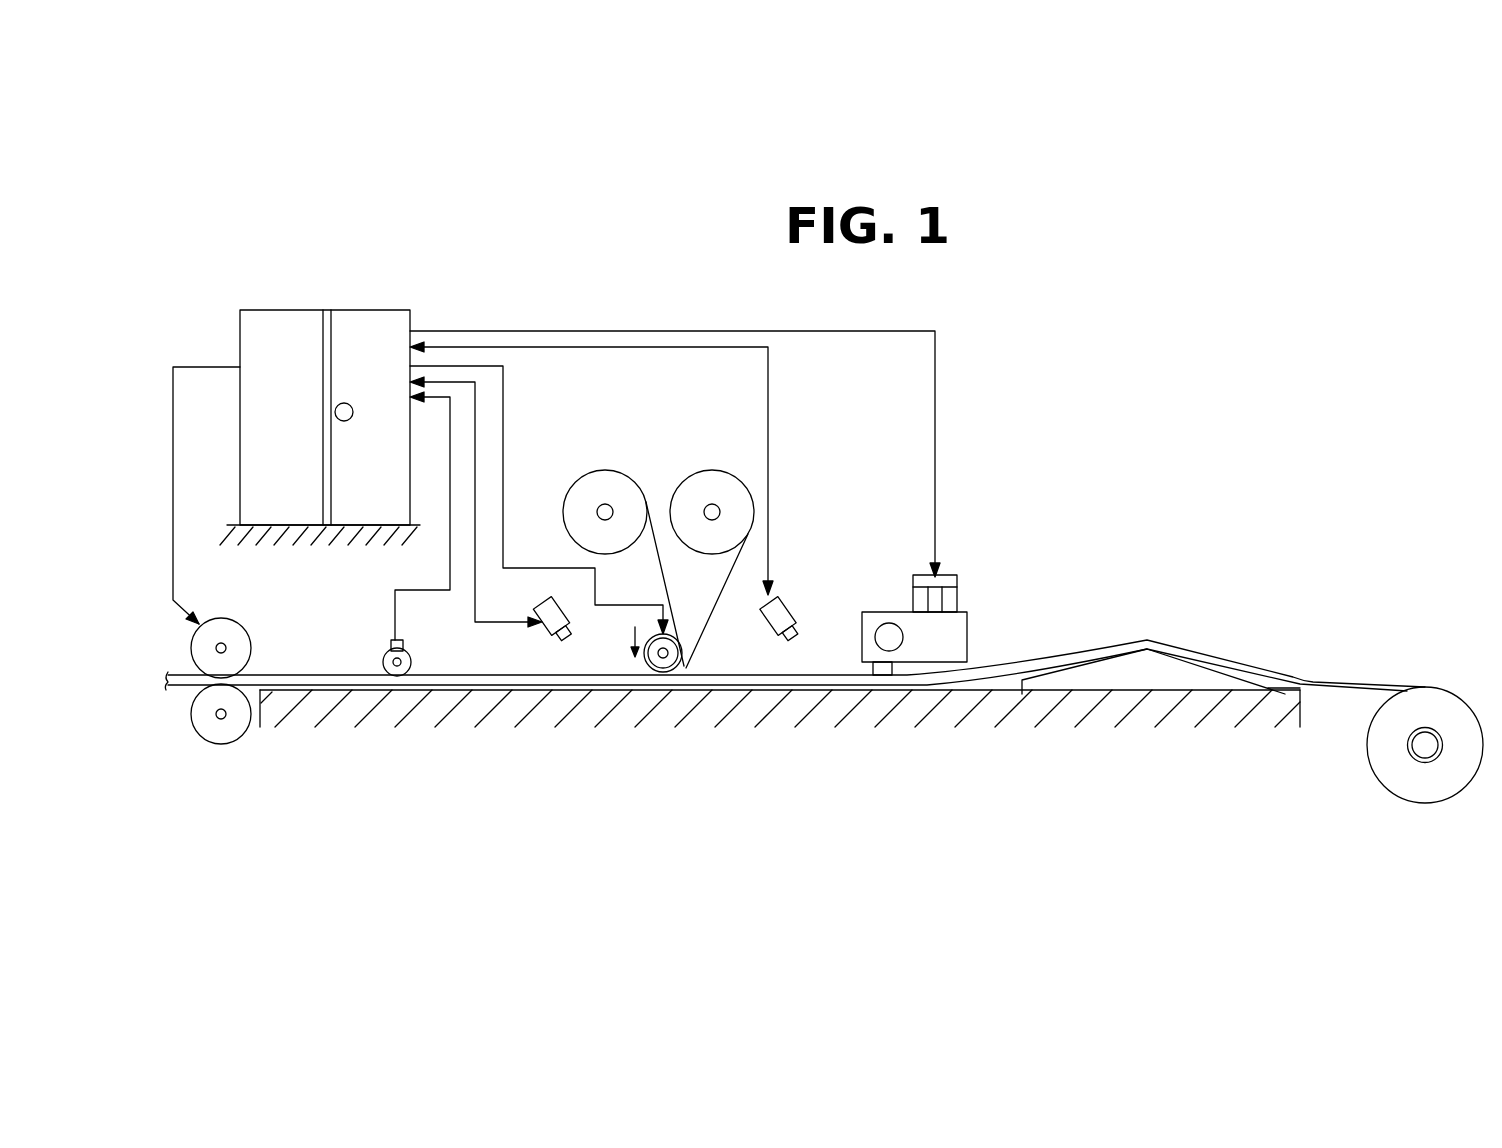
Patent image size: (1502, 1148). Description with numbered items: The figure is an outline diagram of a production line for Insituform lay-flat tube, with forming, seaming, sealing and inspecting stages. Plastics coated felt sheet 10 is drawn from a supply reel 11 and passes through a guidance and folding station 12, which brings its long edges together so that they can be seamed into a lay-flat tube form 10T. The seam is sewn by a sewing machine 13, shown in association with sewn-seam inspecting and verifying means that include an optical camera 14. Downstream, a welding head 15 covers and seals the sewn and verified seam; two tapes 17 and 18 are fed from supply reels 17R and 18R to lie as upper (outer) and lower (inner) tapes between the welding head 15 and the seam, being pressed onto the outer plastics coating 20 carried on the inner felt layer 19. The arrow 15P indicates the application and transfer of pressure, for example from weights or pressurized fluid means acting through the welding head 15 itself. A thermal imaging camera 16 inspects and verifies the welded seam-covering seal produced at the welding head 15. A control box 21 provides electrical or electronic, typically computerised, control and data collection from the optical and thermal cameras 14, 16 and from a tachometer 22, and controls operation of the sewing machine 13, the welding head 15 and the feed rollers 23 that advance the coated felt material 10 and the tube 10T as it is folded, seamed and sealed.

The plastics coated felt sheet 10 is at (1357, 677).
The lay-flat tube form 10T is at (784, 670).
The supply reel 11 is at (1453, 713).
The guidance and folding station 12 is at (1082, 675).
The sewing machine 13 is at (903, 620).
The optical camera 14 is at (780, 608).
The welding head 15 is at (658, 636).
The arrow indicating pressure application 15P is at (617, 642).
The thermal imaging camera 16 is at (550, 603).
The upper tape 17 is at (656, 515).
The supply reel for upper tape 17R is at (605, 482).
The lower tape 18 is at (720, 583).
The supply reel for lower tape 18R is at (727, 482).
The inner felt layer 19 is at (855, 678).
The outer plastics coating 20 is at (720, 672).
The control box 21 is at (357, 315).
The tachometer 22 is at (385, 655).
The feed rollers 23 is at (238, 637).